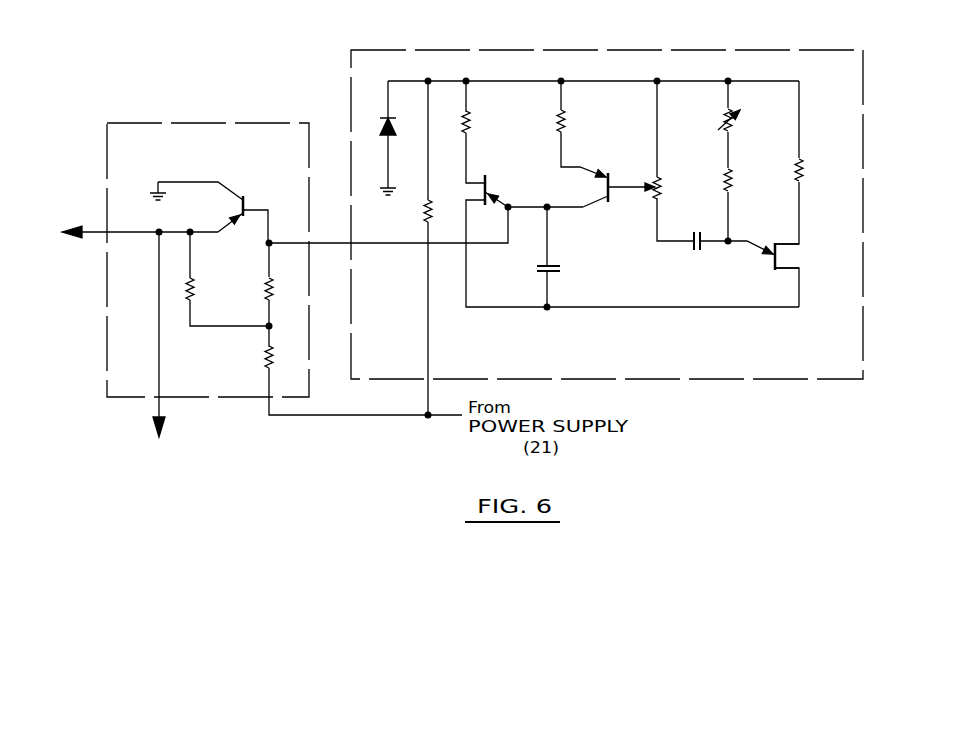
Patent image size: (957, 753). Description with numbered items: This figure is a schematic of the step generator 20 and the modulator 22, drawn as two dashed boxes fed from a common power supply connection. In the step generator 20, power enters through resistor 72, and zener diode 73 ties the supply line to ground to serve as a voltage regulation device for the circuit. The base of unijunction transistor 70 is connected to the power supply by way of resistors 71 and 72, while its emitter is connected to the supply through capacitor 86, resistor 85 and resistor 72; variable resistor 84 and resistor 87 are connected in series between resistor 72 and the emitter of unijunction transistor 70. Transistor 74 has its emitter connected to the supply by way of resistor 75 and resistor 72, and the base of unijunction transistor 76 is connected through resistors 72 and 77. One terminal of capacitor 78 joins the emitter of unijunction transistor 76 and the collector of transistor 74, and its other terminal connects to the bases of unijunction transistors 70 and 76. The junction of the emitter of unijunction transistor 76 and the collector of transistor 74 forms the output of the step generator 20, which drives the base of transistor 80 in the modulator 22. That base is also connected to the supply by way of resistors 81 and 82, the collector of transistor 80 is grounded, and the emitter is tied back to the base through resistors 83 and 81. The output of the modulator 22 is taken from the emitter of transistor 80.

The step generator 20 is at (845, 323).
The modulator 22 is at (277, 140).
The unijunction transistor 70 is at (783, 252).
The resistor 71 is at (805, 170).
The resistor 72 is at (420, 212).
The zener diode 73 is at (373, 130).
The transistor 74 is at (603, 185).
The resistor 75 is at (570, 123).
The unijunction transistor 76 is at (488, 188).
The resistor 77 is at (473, 128).
The capacitor 78 is at (561, 268).
The transistor 80 is at (248, 197).
The resistor 81 is at (278, 290).
The resistor 82 is at (278, 360).
The resistor 83 is at (203, 285).
The variable resistor 84 is at (740, 120).
The resistor 85 is at (668, 182).
The capacitor 86 is at (705, 250).
The resistor 87 is at (735, 172).